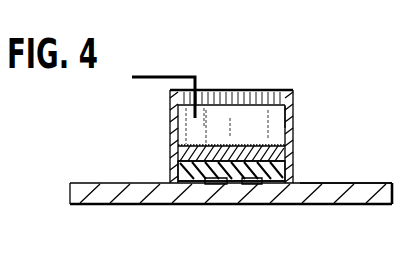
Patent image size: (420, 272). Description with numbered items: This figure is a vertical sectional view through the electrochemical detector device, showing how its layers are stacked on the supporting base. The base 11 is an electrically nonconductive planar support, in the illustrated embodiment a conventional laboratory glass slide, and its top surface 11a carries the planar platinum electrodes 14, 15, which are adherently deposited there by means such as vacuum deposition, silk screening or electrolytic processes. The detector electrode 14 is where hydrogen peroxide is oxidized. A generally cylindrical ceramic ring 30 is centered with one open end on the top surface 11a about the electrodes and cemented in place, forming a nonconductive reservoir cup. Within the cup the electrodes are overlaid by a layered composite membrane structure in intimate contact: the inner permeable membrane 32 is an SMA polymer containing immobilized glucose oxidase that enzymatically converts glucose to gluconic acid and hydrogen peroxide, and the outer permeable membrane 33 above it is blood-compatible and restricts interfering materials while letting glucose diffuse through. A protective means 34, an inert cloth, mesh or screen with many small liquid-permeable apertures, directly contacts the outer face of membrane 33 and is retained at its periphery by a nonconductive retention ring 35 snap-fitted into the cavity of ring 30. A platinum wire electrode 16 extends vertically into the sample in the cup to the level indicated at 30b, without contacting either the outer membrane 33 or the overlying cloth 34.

The base surface 11 is at (392, 205).
The top surface 11a is at (369, 183).
The detector electrode 14 is at (250, 184).
The planar platinum electrode 15 is at (205, 204).
The platinum wire electrode 16 is at (172, 86).
The ceramic ring 30 is at (293, 133).
The sample level 30b is at (200, 118).
The inner permeable membrane 32 is at (187, 167).
The outer permeable membrane 33 is at (210, 146).
The protective means 34 is at (247, 144).
The retention ring 35 is at (293, 116).